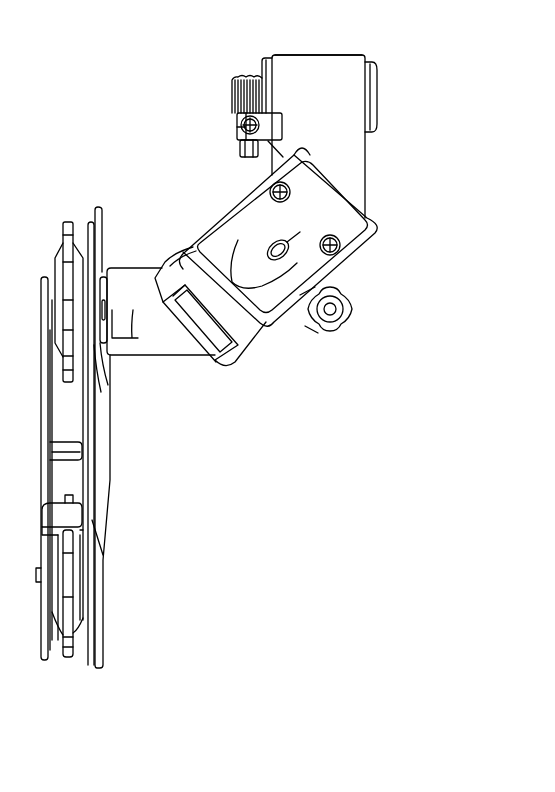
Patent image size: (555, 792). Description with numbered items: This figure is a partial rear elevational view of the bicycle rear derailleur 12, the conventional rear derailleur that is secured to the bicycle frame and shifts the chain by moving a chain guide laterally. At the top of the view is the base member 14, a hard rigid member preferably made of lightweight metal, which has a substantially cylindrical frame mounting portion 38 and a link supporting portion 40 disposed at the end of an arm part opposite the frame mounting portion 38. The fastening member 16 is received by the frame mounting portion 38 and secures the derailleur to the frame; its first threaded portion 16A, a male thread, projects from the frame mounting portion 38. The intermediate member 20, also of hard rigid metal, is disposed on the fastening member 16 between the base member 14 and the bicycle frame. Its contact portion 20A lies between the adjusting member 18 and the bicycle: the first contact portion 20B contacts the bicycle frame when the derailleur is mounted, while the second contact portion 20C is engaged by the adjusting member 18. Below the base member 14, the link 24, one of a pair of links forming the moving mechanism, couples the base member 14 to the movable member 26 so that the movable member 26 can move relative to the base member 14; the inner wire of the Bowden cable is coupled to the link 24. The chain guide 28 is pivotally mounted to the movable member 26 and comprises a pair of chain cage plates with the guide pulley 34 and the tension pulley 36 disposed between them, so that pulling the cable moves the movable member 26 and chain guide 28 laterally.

The bicycle rear derailleur 12 is at (160, 186).
The base member 14 is at (303, 50).
The fastening member 16 is at (384, 90).
The first threaded portion 16A is at (240, 77).
The adjusting member 18 is at (246, 152).
The intermediate member 20 is at (259, 50).
The contact portion 20A is at (232, 121).
The first contact portion 20B is at (237, 135).
The second contact portion 20C is at (253, 160).
The link 24 is at (252, 322).
The movable member 26 is at (175, 362).
The chain guide 28 is at (114, 489).
The guide pulley 34 is at (65, 222).
The tension pulley 36 is at (70, 650).
The frame mounting portion 38 is at (350, 55).
The link supporting portion 40 is at (362, 256).